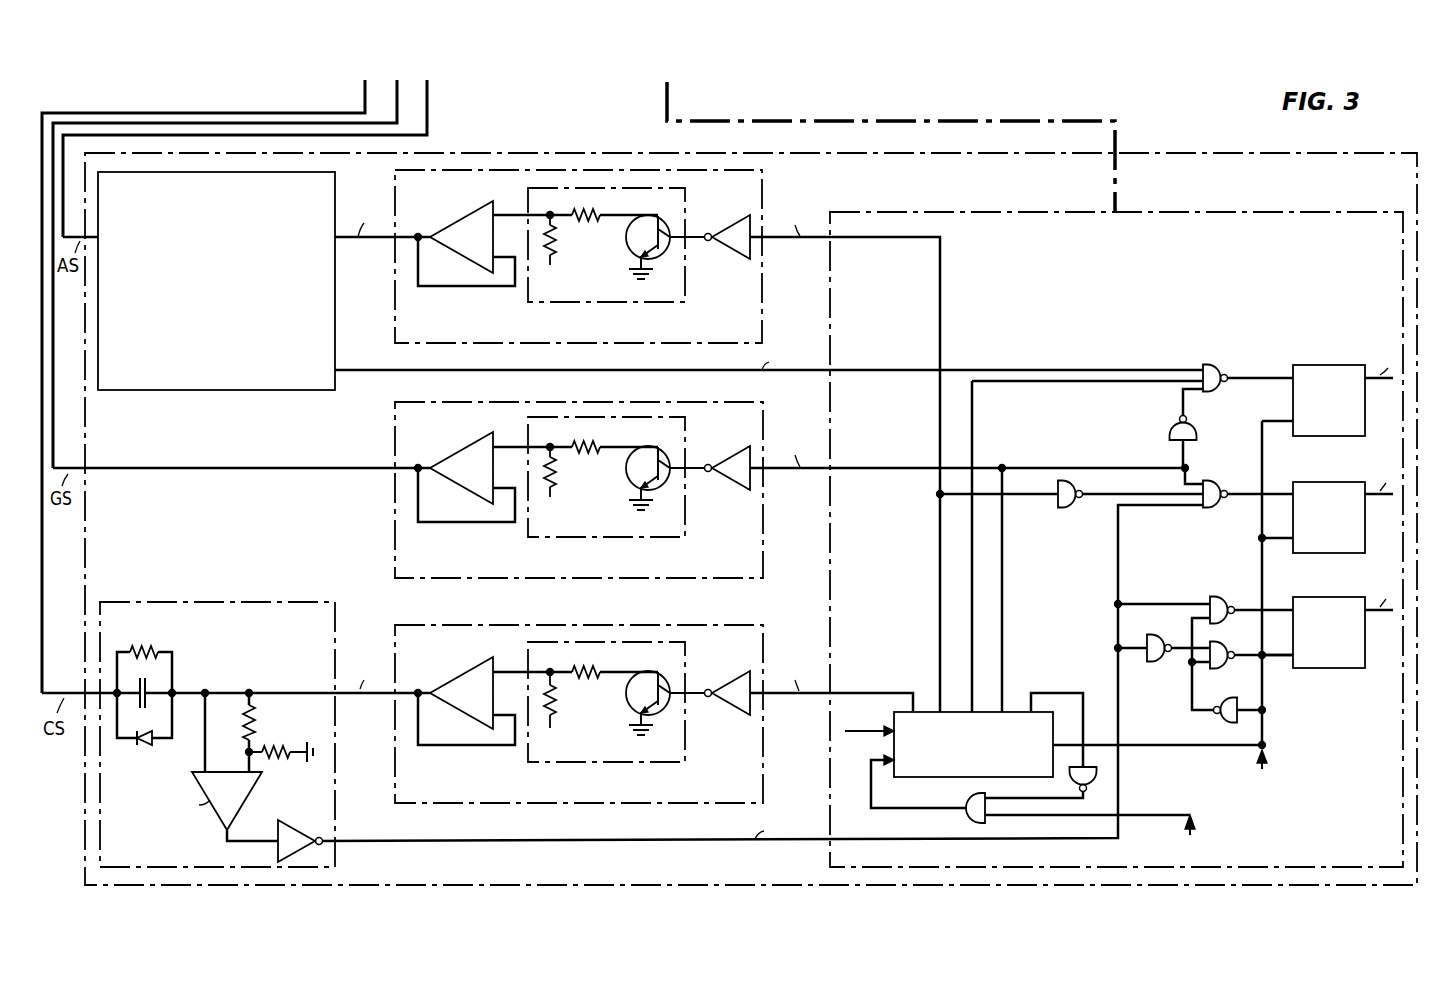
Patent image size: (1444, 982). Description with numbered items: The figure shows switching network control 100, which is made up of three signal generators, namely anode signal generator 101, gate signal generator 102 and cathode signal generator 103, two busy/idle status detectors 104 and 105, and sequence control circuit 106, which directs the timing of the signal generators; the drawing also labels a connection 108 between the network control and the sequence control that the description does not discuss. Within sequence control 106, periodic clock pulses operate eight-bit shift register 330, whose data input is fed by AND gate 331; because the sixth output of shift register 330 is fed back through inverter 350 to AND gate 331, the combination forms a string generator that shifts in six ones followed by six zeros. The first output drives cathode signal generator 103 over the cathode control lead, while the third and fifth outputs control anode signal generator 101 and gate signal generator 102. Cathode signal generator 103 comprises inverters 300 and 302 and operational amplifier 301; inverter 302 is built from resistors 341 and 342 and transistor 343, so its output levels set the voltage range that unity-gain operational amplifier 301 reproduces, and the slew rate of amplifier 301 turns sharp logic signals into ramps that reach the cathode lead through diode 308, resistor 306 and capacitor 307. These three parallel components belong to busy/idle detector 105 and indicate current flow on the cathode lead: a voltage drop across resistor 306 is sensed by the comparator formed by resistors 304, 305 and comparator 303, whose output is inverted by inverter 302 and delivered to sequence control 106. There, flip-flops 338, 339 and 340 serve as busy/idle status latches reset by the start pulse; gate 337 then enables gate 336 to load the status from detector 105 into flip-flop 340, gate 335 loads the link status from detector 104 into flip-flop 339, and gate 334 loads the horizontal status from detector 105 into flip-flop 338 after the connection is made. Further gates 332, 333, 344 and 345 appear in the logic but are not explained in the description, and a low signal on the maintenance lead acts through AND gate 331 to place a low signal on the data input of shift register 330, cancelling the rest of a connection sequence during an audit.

The switching network control 100 is at (1308, 201).
The anode signal generator 101 is at (775, 187).
The gate signal generator 102 is at (775, 412).
The cathode signal generator 103 is at (603, 708).
The busy/idle status detector 104 is at (253, 391).
The busy/idle status detector 105 is at (300, 601).
The sequence control circuit 106 is at (1010, 212).
The control line 108 is at (718, 121).
The inverter 300 is at (722, 700).
The operational amplifier 301 is at (466, 718).
The inverter 302 is at (299, 836).
The comparator 303 is at (252, 787).
The resistor 304 is at (280, 763).
The resistor 305 is at (258, 723).
The resistor 306 is at (146, 650).
The capacitor 307 is at (152, 677).
The diode 308 is at (147, 745).
The shift register 330 is at (920, 778).
The AND gate 331 is at (985, 822).
The NAND gate 332 is at (1172, 428).
The NAND gate 333 is at (1060, 510).
The gate 334 is at (1212, 483).
The gate 335 is at (1212, 366).
The gate 336 is at (1230, 589).
The gate 337 is at (1228, 697).
The flip-flop 338 is at (1335, 483).
The flip-flop 339 is at (1323, 366).
The flip-flop 340 is at (1342, 589).
The resistor 341 is at (575, 664).
The resistor 342 is at (563, 710).
The transistor 343 is at (655, 665).
The NAND gate 344 is at (1222, 646).
The NAND gate 345 is at (1167, 629).
The inverter 350 is at (1068, 780).